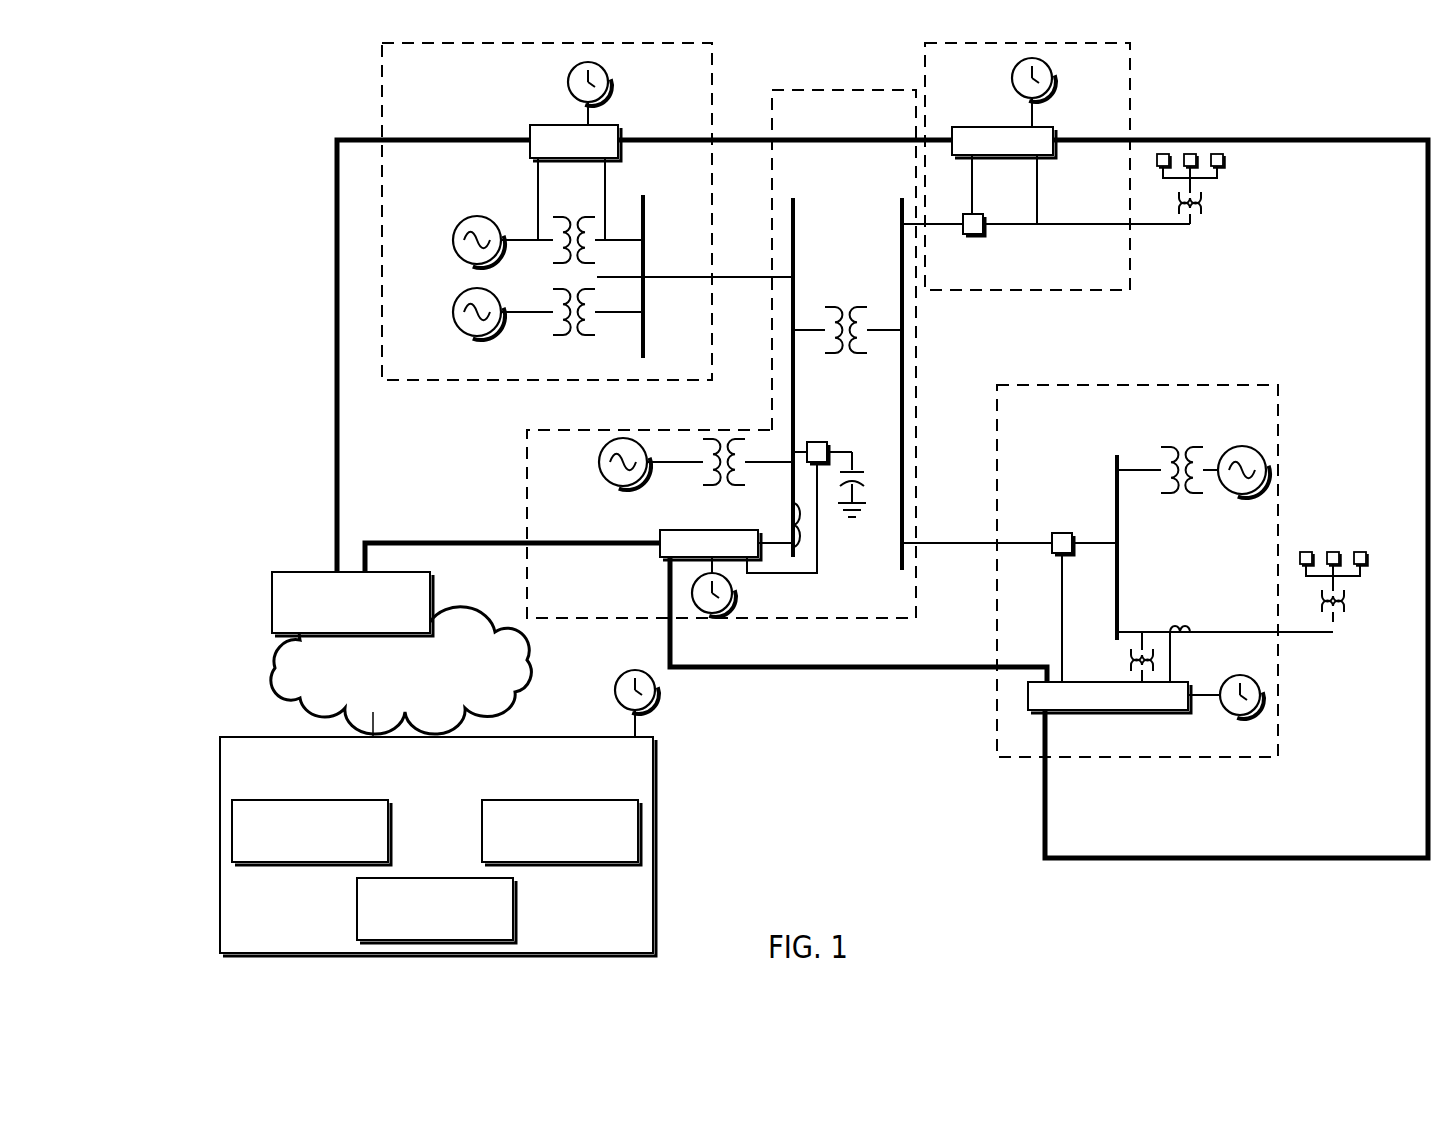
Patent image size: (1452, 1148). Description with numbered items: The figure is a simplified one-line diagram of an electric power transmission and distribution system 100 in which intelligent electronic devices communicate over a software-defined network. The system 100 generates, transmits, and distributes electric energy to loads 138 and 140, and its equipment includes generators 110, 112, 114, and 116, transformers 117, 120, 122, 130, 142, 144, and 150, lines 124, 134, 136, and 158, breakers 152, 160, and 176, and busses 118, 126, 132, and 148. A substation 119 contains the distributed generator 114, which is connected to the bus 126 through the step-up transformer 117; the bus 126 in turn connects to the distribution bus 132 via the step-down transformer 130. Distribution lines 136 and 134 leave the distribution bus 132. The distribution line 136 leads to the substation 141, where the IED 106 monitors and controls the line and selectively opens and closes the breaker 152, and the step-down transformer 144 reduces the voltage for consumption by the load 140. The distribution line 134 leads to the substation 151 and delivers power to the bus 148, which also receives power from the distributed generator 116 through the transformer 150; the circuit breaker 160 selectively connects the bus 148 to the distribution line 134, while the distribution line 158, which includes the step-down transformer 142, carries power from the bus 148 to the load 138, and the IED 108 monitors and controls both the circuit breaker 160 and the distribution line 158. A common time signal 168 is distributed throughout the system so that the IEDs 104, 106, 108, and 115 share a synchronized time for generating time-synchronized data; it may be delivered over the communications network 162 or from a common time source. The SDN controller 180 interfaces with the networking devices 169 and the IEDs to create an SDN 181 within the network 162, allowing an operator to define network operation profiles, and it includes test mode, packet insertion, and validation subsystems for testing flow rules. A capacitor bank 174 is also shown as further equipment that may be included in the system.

The electric power transmission and distribution system 100 is at (208, 100).
The IED 104 is at (548, 125).
The IED 106 is at (978, 127).
The IED 108 is at (1158, 710).
The generator 110 is at (453, 238).
The generator 112 is at (453, 310).
The generator 114 is at (598, 460).
The IED 115 is at (735, 530).
The distributed generator 116 is at (1228, 492).
The step-up transformer 117 is at (705, 483).
The bus 118 is at (648, 335).
The substation 119 is at (583, 618).
The transformer 120 is at (553, 258).
The transformer 122 is at (575, 337).
The line 124 is at (727, 279).
The bus 126 is at (797, 352).
The step-down transformer 130 is at (846, 307).
The distribution bus 132 is at (902, 528).
The distribution line 134 is at (1008, 545).
The distribution line 136 is at (963, 228).
The load 138 is at (1333, 551).
The load 140 is at (1225, 160).
The substation 141 is at (1105, 290).
The step-down transformer 142 is at (1348, 610).
The step-down transformer 144 is at (1205, 203).
The bus 148 is at (1112, 458).
The transformer 150 is at (1180, 447).
The substation 151 is at (1210, 757).
The breaker 152 is at (985, 228).
The distribution line 158 is at (1212, 630).
The circuit breaker 160 is at (1058, 533).
The communications network 162 is at (384, 690).
The common time signal 168 is at (609, 83).
The networking devices 169 is at (303, 570).
The capacitor bank 174 is at (858, 466).
The breaker 176 is at (825, 442).
The SDN controller 180 is at (421, 811).
The SDN 181 is at (337, 298).